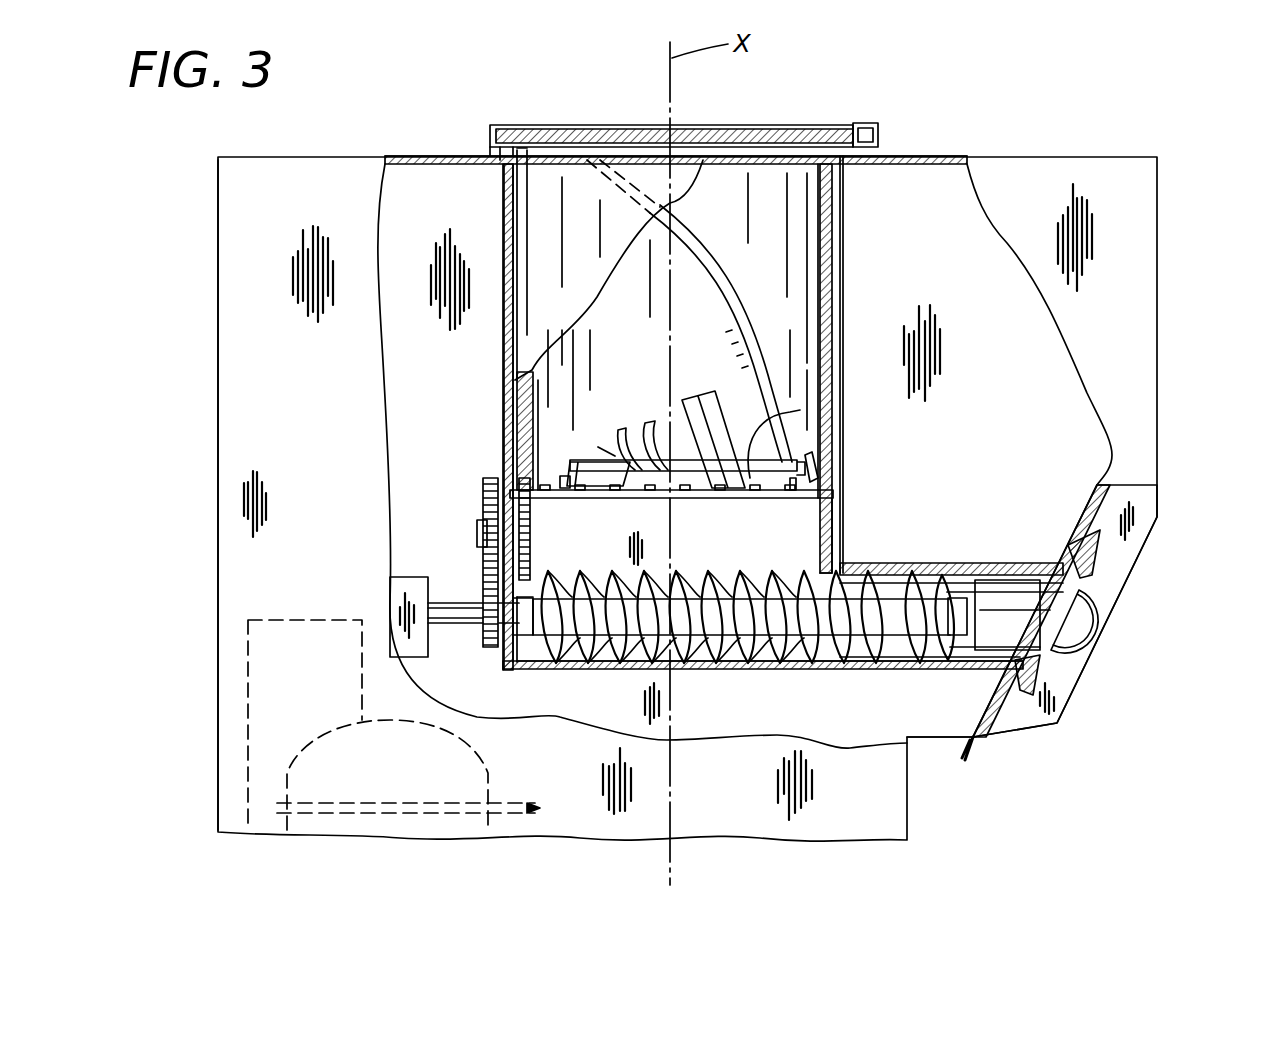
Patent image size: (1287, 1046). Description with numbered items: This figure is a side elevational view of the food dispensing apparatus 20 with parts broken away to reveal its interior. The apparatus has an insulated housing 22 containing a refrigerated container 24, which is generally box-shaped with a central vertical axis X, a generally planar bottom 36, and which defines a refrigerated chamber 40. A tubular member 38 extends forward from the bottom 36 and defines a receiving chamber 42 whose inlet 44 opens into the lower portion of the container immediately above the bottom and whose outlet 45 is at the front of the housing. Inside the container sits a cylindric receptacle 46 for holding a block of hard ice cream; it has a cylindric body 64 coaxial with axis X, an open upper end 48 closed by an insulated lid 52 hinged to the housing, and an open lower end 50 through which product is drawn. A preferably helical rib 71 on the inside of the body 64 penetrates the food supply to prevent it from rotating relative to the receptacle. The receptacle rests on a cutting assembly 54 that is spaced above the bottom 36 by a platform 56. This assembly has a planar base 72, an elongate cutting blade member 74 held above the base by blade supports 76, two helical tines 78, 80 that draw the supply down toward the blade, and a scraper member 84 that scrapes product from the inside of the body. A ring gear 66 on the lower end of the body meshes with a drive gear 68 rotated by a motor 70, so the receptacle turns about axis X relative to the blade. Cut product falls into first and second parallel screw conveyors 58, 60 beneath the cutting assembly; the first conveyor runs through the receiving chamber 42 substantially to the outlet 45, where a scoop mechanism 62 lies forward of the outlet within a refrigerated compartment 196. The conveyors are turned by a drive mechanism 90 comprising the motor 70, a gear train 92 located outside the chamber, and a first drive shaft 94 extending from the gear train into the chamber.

The apparatus 20 is at (198, 297).
The insulated housing 22 is at (313, 152).
The refrigerated container 24 is at (719, 413).
The bottom 36 is at (742, 668).
The tubular member 38 is at (890, 671).
The refrigerated chamber 40 is at (716, 187).
The receiving chamber 42 is at (873, 578).
The inlet 44 is at (823, 668).
The outlet 45 is at (1008, 628).
The receptacle 46 is at (845, 292).
The open upper end 48 is at (524, 148).
The open lower end 50 is at (622, 496).
The insulated lid 52 is at (640, 126).
The cutting assembly 54 is at (600, 446).
The platform 56 is at (842, 507).
The first screw conveyer 58 is at (937, 578).
The second screw conveyer 60 is at (762, 570).
The scoop mechanism 62 is at (1107, 622).
The cylindric body 64 is at (845, 207).
The ring gear 66 is at (684, 497).
The drive gear 68 is at (535, 555).
The motor 70 is at (400, 600).
The rib 71 is at (702, 263).
The base 72 is at (771, 496).
The cutting blade member 74 is at (782, 415).
The blade supports 76 is at (565, 478).
The helical tine 78 is at (651, 420).
The helical tine 80 is at (632, 428).
The scraper member 84 is at (712, 393).
The drive mechanism 90 is at (477, 590).
The gear train 92 is at (480, 557).
The first drive shaft 94 is at (500, 650).
The refrigerated compartment 196 is at (1127, 547).